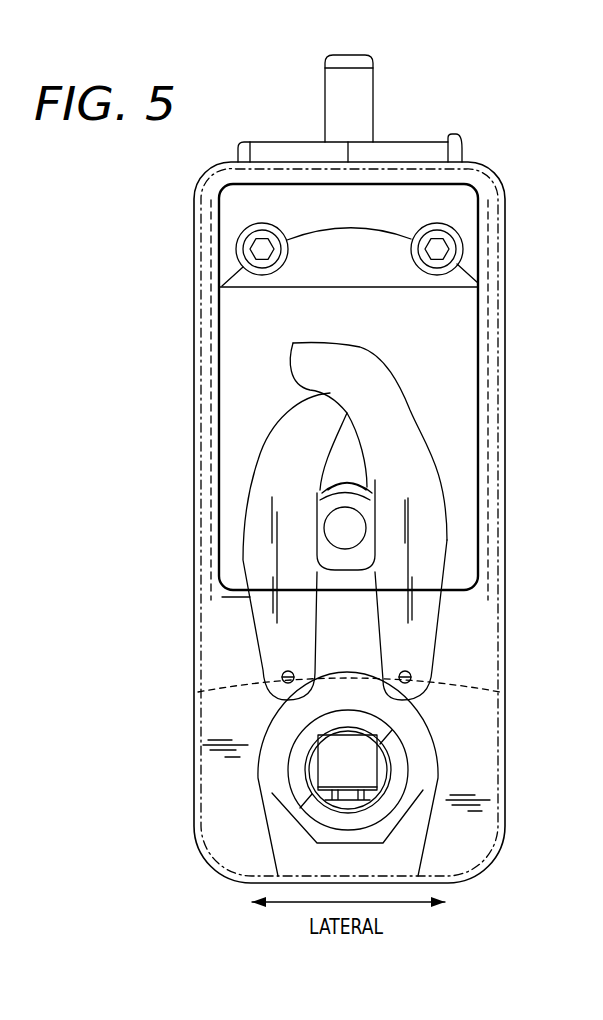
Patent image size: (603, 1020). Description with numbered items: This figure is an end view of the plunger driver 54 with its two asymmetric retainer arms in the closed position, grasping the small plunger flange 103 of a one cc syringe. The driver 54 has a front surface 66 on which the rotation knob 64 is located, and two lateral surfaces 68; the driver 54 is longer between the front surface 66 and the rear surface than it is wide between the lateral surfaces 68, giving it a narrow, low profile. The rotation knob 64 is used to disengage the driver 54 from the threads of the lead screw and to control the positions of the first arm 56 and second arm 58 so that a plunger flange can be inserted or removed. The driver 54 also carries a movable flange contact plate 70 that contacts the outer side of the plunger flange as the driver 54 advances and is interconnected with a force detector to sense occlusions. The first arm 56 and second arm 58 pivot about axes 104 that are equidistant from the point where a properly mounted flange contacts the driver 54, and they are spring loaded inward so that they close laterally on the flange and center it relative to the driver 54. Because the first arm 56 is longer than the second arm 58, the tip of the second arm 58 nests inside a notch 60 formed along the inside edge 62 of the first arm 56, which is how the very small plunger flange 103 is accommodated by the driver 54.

The plunger driver 54 is at (503, 166).
The first arm 56 is at (425, 608).
The second arm 58 is at (285, 638).
The notch 60 is at (347, 410).
The inside edge 62 is at (300, 535).
The rotation knob 64 is at (375, 100).
The front surface 66 is at (248, 142).
The lateral surfaces 68 is at (193, 333).
The movable flange contact plate 70 is at (240, 212).
The small plunger flange 103 is at (325, 500).
The axes 104 is at (280, 678).